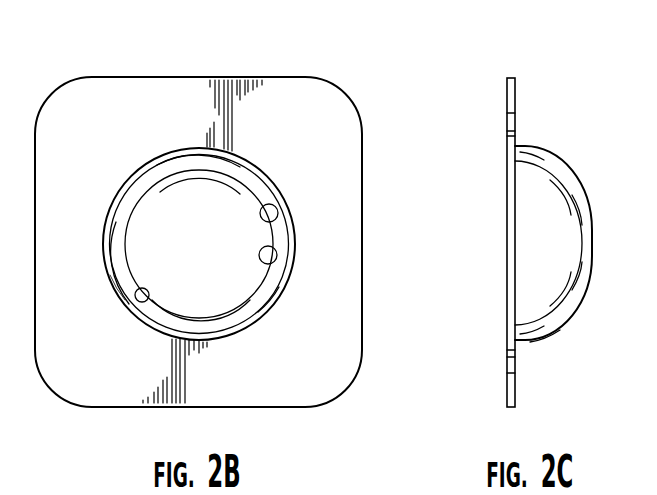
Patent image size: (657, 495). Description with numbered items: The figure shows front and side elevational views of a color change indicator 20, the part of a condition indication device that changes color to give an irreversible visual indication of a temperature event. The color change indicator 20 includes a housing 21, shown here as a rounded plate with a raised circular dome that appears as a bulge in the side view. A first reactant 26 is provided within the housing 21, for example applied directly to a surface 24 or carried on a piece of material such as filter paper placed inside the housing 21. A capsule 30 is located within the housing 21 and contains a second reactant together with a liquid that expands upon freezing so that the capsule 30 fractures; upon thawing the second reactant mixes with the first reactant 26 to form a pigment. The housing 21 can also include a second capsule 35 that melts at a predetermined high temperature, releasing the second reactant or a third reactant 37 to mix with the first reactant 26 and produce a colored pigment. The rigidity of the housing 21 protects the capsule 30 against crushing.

The color change indicator 20 is at (222, 46).
The housing 21 is at (199, 152).
The surface 24 is at (280, 185).
The first reactant 26 is at (240, 187).
The capsule 30 is at (277, 252).
The second capsule 35 is at (132, 316).
The third reactant 37 is at (146, 302).